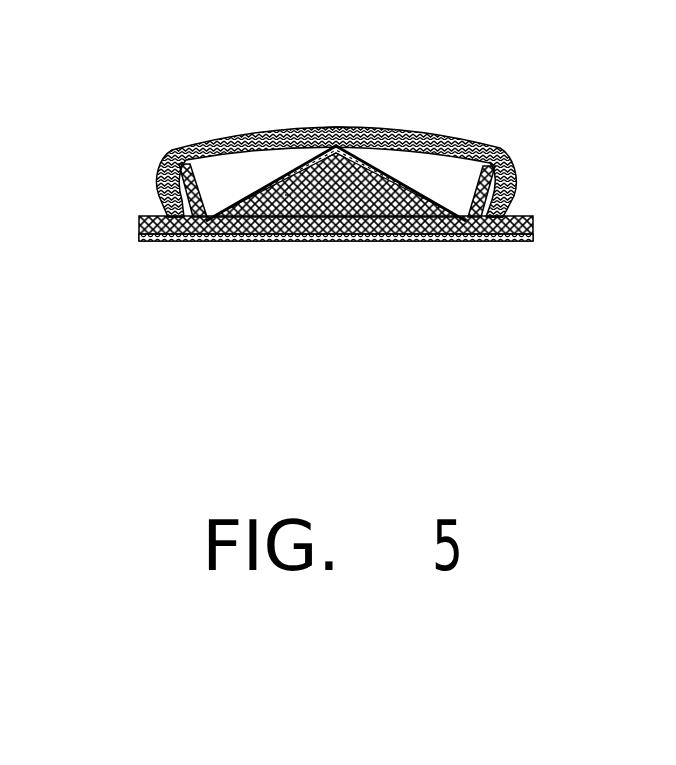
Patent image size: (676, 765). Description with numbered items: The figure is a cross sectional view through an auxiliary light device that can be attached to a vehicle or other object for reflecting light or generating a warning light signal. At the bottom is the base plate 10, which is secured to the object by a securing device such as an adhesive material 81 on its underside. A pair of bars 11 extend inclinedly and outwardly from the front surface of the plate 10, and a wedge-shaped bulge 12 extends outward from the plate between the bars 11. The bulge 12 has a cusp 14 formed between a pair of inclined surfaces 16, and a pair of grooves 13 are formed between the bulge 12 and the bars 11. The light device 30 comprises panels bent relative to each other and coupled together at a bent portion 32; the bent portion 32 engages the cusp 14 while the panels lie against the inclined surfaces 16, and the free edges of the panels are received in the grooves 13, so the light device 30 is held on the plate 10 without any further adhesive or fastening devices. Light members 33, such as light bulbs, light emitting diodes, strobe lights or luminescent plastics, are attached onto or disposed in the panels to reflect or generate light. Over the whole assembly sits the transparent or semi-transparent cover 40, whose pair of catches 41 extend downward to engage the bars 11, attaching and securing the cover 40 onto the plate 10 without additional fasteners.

The plate 10 is at (533, 228).
The bars 11 is at (180, 243).
The bulge 12 is at (375, 217).
The grooves 13 is at (209, 221).
The cusp 14 is at (333, 152).
The inclined surfaces 16 is at (288, 195).
The light device 30 is at (398, 168).
The bent portion 32 is at (333, 127).
The light members 33 is at (295, 162).
The cover 40 is at (363, 128).
The catches 41 is at (157, 200).
The adhesive material 81 is at (527, 242).